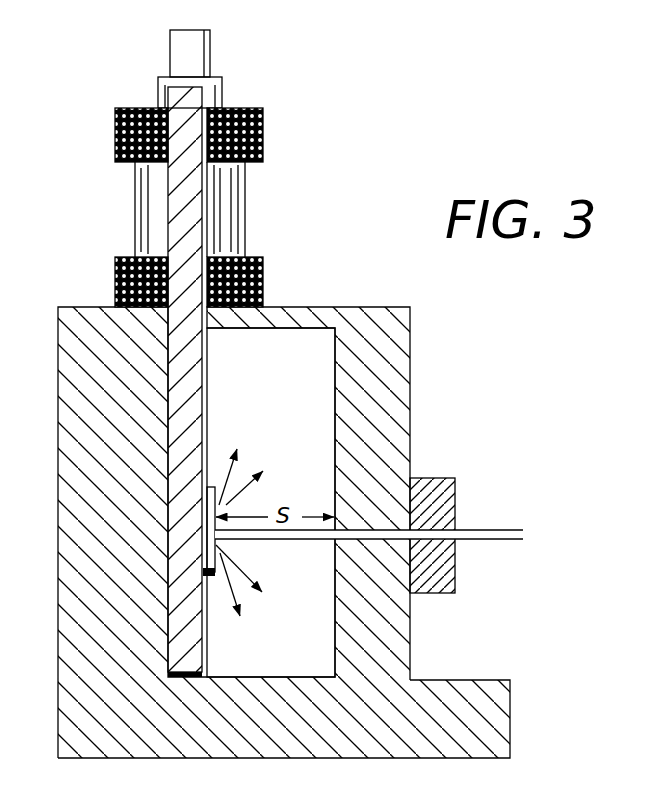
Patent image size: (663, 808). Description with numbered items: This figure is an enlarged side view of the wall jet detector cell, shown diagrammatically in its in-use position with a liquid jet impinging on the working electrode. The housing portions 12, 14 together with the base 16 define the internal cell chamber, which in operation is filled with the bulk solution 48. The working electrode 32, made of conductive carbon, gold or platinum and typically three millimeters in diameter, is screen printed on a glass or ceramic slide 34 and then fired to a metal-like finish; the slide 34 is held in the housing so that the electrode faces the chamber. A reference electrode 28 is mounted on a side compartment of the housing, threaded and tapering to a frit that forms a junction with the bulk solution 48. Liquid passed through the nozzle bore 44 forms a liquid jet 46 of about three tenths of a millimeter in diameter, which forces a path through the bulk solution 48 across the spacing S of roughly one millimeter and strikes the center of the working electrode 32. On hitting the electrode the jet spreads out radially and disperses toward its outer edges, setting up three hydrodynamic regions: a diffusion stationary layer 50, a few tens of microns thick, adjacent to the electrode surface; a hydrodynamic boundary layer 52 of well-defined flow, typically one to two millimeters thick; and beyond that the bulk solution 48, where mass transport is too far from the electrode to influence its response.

The housing portion 12 is at (172, 387).
The housing portion 14 is at (332, 362).
The base 16 is at (279, 676).
The reference electrode 28 is at (248, 195).
The working electrode 32 is at (218, 580).
The slide 34 is at (166, 213).
The nozzle bore 44 is at (525, 539).
The liquid jet 46 is at (293, 548).
The bulk solution 48 is at (271, 502).
The diffusion stationary layer 50 is at (217, 488).
The hydrodynamic boundary layer 52 is at (238, 485).